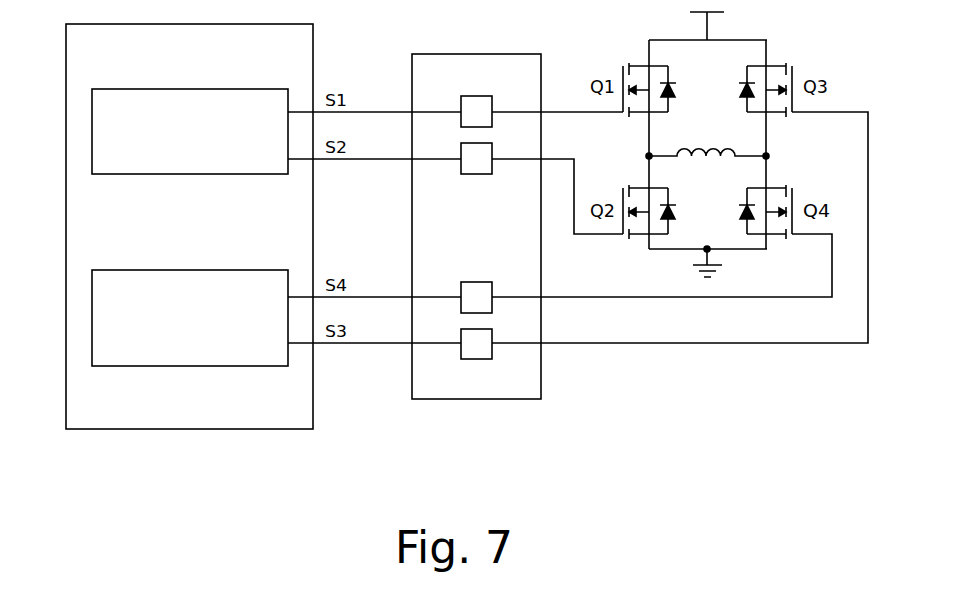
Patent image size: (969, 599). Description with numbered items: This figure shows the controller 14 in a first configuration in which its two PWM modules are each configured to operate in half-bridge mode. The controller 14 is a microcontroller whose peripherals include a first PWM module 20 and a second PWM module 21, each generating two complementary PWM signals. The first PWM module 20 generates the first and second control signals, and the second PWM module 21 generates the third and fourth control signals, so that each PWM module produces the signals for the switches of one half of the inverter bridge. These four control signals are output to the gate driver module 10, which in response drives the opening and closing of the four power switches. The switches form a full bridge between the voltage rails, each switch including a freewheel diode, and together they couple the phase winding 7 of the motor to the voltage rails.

The controller 14 is at (183, 430).
The first PWM module 20 is at (92, 135).
The second PWM module 21 is at (92, 323).
The gate driver module 10 is at (478, 400).
The phase winding 7 is at (716, 142).